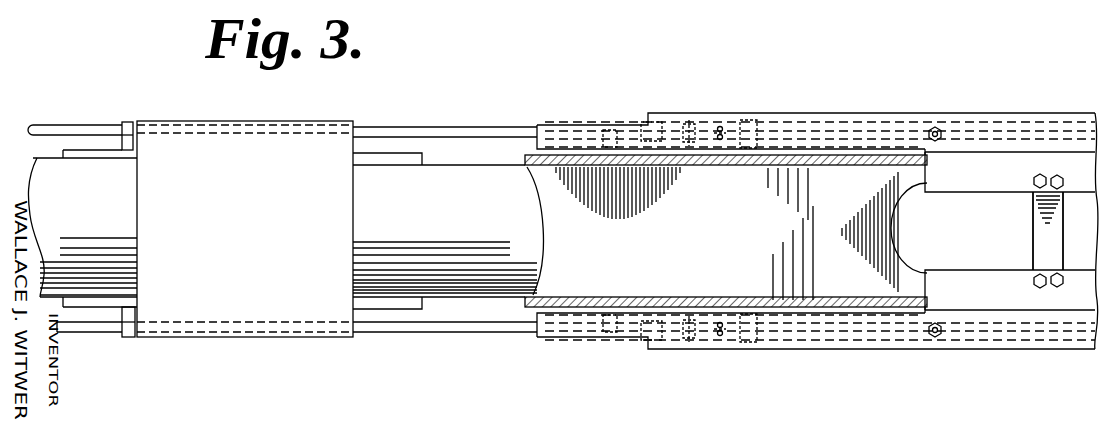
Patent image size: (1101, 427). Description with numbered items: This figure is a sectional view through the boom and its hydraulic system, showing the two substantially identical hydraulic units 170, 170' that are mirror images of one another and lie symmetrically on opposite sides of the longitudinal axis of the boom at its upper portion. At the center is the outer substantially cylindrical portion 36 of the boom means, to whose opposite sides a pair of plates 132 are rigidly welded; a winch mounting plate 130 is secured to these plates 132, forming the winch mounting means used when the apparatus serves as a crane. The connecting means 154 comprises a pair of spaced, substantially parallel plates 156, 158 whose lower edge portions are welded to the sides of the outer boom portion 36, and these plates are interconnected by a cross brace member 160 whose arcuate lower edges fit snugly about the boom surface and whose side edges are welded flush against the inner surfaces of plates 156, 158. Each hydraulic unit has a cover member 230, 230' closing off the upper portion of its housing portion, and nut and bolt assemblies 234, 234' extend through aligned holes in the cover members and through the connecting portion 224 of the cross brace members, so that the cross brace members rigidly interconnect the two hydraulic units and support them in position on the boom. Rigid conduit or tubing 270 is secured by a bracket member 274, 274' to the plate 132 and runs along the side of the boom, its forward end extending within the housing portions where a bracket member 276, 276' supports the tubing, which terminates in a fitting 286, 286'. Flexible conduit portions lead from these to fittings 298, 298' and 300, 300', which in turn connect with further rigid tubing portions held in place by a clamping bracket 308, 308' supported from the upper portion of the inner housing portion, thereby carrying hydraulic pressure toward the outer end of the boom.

The winch mounting plate 130 is at (268, 210).
The plates 132 is at (398, 160).
The connecting means 154 is at (526, 189).
The plate 156 is at (698, 298).
The plate 158 is at (694, 166).
The cross brace member 160 is at (806, 225).
The hydraulic unit 170 is at (816, 361).
The hydraulic unit 170' is at (816, 108).
The connecting portion 224 is at (1015, 230).
The cover member 230 is at (1010, 329).
The cover member 230' is at (1013, 135).
The nut and bolt assemblies 234 is at (1067, 291).
The nut and bolt assemblies 234' is at (1015, 174).
The rigid tubing 270 is at (373, 332).
The bracket member 274 is at (126, 338).
The bracket member 274' is at (153, 115).
The bracket member 276 is at (697, 347).
The bracket member 276' is at (707, 113).
The fitting 286 is at (737, 356).
The fitting 286' is at (745, 104).
The fitting 298 is at (647, 353).
The fitting 298' is at (665, 105).
The fitting 300 is at (601, 344).
The fitting 300' is at (614, 119).
The clamping bracket 308 is at (773, 348).
The clamping bracket 308' is at (778, 118).
The outer cylindrical portion 36 is at (988, 230).